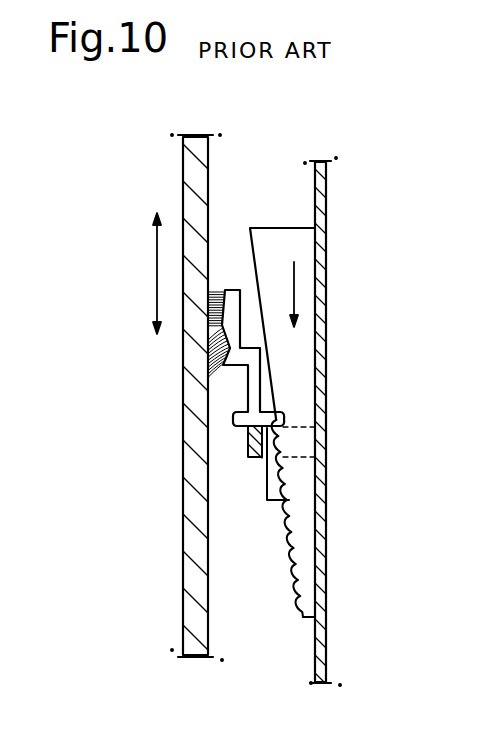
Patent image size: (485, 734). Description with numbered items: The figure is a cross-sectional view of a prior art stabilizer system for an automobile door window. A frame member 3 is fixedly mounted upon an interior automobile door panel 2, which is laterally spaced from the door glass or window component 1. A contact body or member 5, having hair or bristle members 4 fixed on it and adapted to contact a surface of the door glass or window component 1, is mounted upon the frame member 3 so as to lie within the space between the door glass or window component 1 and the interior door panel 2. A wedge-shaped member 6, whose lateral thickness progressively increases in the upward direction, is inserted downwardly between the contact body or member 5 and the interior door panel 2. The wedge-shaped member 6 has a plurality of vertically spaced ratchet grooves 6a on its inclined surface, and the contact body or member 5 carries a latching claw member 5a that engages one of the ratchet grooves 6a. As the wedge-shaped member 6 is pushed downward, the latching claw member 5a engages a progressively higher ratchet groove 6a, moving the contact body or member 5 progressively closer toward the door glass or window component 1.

The door glass or window component 1 is at (190, 528).
The interior automobile door panel 2 is at (330, 653).
The frame member 3 is at (248, 448).
The hair or bristle members 4 is at (212, 352).
The contact body or member 5 is at (205, 460).
The latching claw member 5a is at (283, 500).
The wedge-shaped member 6 is at (326, 422).
The ratchet grooves 6a is at (300, 530).